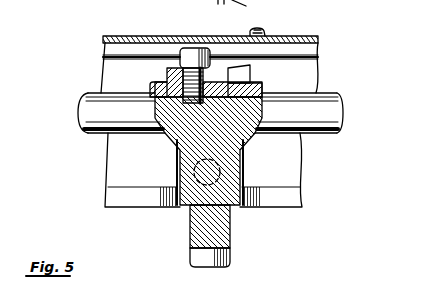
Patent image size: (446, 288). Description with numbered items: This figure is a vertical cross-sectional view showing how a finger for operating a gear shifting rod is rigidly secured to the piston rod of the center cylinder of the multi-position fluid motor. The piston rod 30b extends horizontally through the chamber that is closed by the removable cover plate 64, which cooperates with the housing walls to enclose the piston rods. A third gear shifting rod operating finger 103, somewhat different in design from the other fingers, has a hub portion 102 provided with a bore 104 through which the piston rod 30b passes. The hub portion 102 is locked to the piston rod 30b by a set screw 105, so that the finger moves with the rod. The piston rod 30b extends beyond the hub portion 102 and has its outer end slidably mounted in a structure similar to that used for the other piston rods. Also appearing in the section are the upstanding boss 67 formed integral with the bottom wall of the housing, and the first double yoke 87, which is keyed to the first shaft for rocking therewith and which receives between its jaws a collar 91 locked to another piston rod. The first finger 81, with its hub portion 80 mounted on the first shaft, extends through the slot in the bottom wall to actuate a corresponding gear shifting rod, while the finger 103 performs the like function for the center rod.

The removable cover plate 64 is at (268, 42).
The first double yoke 87 is at (234, 67).
The set screw 105 is at (196, 50).
The collar 91 is at (158, 88).
The hub portion 102 is at (250, 86).
The piston rod 30b is at (320, 136).
The bore 104 is at (178, 149).
The hub portion 80 is at (178, 206).
The boss 67 is at (248, 196).
The third gear shifting rod operating finger 103 is at (220, 236).
The first finger 81 is at (220, 258).